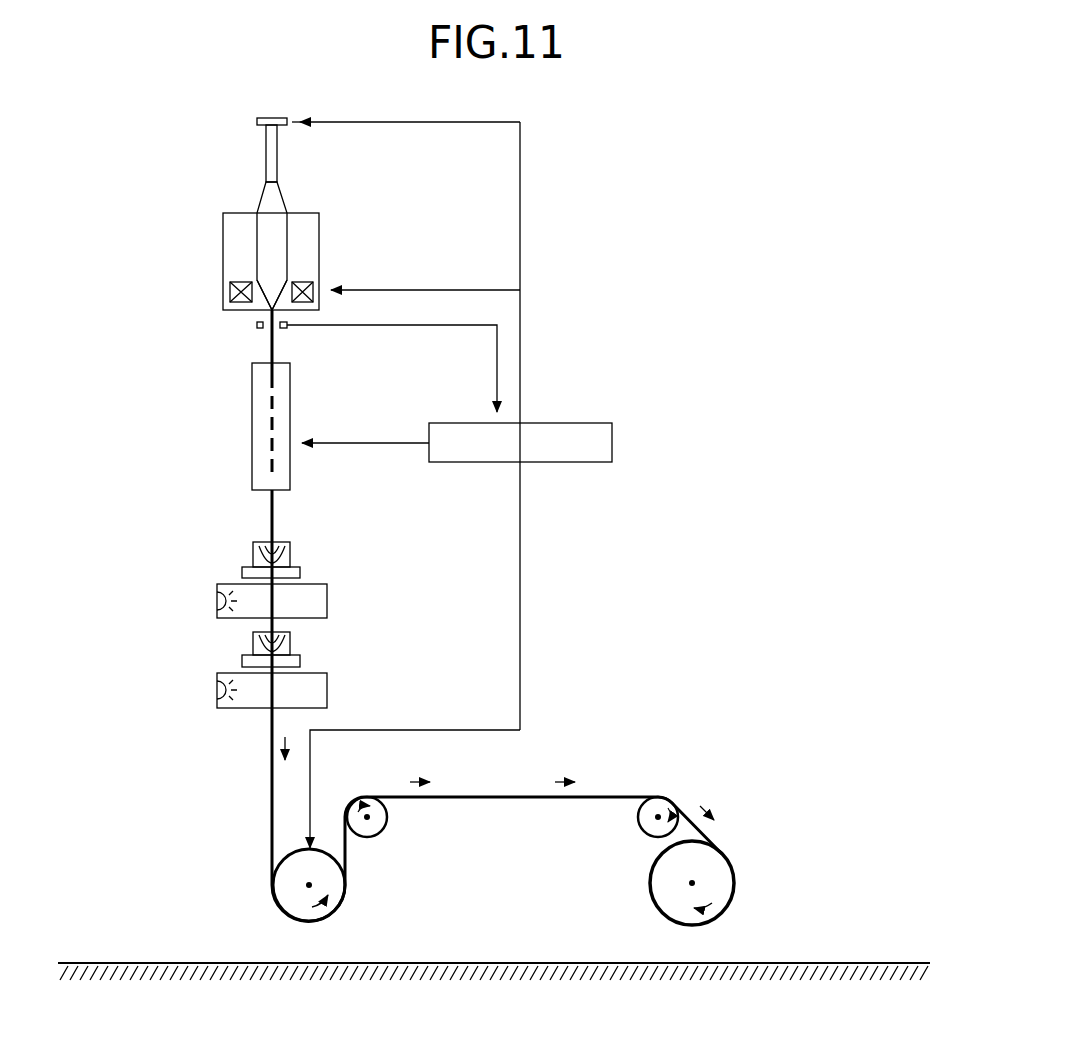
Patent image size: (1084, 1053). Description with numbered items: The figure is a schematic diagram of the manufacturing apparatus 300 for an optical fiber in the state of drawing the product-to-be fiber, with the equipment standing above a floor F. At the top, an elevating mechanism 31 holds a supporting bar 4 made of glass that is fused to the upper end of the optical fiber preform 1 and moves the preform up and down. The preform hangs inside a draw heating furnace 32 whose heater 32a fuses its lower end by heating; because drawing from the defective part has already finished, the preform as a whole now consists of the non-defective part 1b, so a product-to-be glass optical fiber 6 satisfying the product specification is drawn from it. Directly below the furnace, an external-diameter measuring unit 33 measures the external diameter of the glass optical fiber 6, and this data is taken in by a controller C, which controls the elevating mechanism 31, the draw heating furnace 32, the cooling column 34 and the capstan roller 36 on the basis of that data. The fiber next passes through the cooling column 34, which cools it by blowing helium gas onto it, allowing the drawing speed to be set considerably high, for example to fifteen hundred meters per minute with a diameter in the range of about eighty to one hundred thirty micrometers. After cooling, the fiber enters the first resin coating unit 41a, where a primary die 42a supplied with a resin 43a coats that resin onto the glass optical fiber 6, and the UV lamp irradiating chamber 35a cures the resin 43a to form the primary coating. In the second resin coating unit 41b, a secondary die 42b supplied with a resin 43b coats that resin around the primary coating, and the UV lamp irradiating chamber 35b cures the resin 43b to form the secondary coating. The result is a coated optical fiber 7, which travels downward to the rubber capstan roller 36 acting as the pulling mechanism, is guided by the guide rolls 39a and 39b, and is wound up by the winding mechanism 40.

The manufacturing apparatus 300 is at (600, 184).
The elevating mechanism 31 is at (257, 121).
The supporting bar 4 is at (266, 157).
The optical fiber preform 1 is at (300, 235).
The non-defective part 1b is at (257, 243).
The draw heating furnace 32 is at (332, 243).
The heater 32a is at (230, 292).
The external-diameter measuring unit 33 is at (252, 345).
The product-to-be glass optical fiber 6 is at (274, 350).
The cooling column 34 is at (291, 405).
The controller C is at (575, 423).
The primary die 42a is at (255, 550).
The resin for primary coating 43a is at (276, 547).
The resin coating unit 41a is at (300, 573).
The UV lamp irradiating chamber 35a is at (208, 568).
The secondary die 42b is at (255, 645).
The resin for secondary coating 43b is at (276, 636).
The resin coating unit 41b is at (300, 662).
The UV lamp irradiating chamber 35b is at (215, 725).
The optical fiber 7 is at (272, 835).
The capstan roller 36 is at (327, 850).
The guide roll 39a is at (385, 836).
The guide roll 39b is at (640, 828).
The winding mechanism 40 is at (665, 915).
The floor F is at (88, 963).